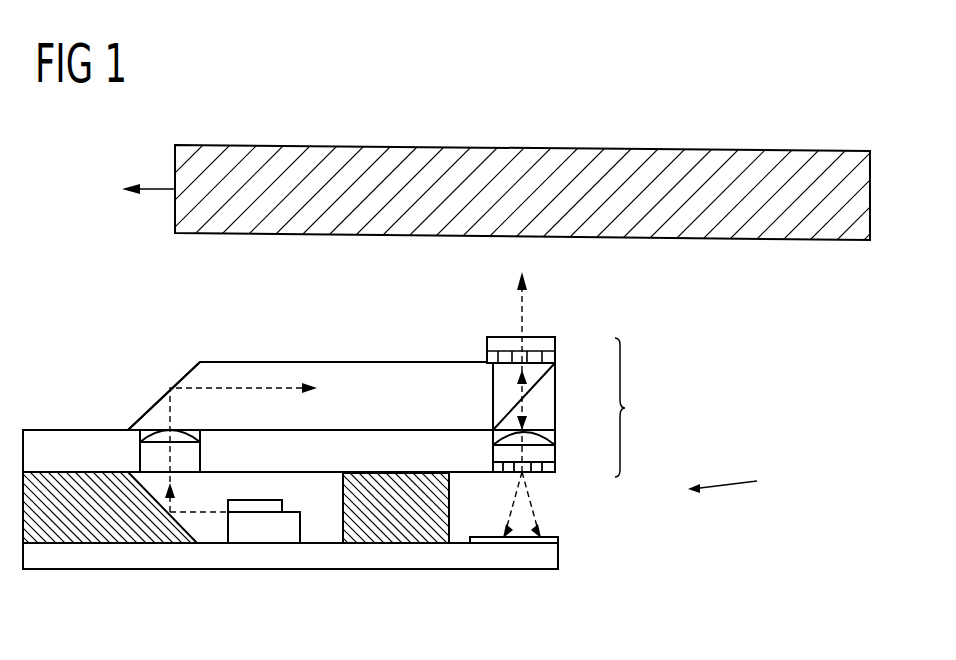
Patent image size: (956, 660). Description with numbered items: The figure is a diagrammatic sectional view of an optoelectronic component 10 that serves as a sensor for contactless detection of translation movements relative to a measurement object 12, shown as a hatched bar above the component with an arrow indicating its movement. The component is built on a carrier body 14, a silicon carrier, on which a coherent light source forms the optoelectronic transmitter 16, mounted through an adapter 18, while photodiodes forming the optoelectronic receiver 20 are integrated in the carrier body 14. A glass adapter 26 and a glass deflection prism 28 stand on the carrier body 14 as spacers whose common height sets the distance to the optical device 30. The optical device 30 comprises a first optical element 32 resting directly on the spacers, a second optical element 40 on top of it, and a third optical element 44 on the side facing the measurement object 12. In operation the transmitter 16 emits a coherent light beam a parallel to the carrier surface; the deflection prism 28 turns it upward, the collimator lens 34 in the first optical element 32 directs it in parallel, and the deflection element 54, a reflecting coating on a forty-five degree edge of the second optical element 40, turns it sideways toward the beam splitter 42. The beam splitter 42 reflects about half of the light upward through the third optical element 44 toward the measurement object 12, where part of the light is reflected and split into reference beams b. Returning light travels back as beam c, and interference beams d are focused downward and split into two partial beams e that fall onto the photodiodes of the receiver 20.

The optoelectronic component 10 is at (785, 479).
The measurement object 12 is at (558, 148).
The carrier body 14 is at (553, 562).
The optoelectronic transmitter 16 is at (265, 505).
The adapter 18 is at (262, 528).
The optoelectronic receiver 20 is at (560, 540).
The adapter 26 is at (393, 538).
The deflection prism 28 is at (83, 528).
The optical device 30 is at (572, 383).
The first optical element 32 is at (46, 437).
The collimator lens 34 is at (180, 437).
The second optical element 40 is at (266, 366).
The beam splitter 42 is at (558, 390).
The third optical element 44 is at (548, 340).
The deflection element 54 is at (150, 408).
The coherent light beam a is at (362, 385).
The reference beams b is at (518, 380).
The light beam c is at (520, 315).
The interference beams d is at (528, 418).
The partial beams e is at (528, 498).